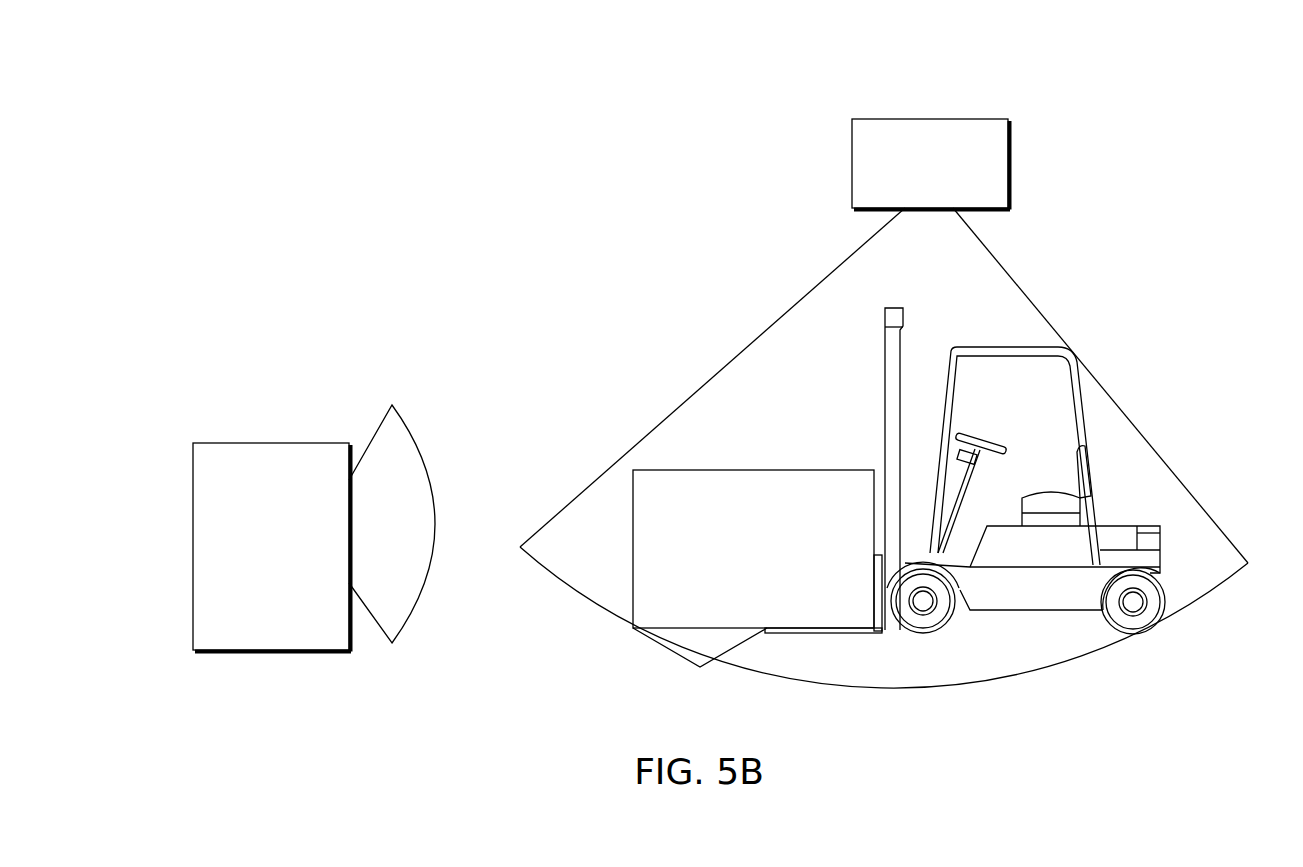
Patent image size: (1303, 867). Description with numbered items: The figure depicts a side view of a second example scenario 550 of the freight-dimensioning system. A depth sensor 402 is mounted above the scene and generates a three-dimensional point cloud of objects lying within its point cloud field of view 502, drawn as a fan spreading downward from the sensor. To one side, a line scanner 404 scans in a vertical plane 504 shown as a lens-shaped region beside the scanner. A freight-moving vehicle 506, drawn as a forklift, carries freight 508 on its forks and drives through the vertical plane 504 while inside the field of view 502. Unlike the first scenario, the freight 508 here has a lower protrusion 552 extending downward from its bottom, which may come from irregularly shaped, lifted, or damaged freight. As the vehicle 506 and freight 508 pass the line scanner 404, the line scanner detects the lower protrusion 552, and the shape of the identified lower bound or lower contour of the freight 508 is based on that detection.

The scenario 550 is at (1212, 82).
The depth sensor 402 is at (852, 162).
The line scanner 404 is at (193, 545).
The 3D point cloud field of view 502 is at (1100, 383).
The vertical plane 504 is at (435, 523).
The freight-moving vehicle 506 is at (1160, 558).
The freight 508 is at (755, 470).
The lower protrusion 552 is at (697, 641).